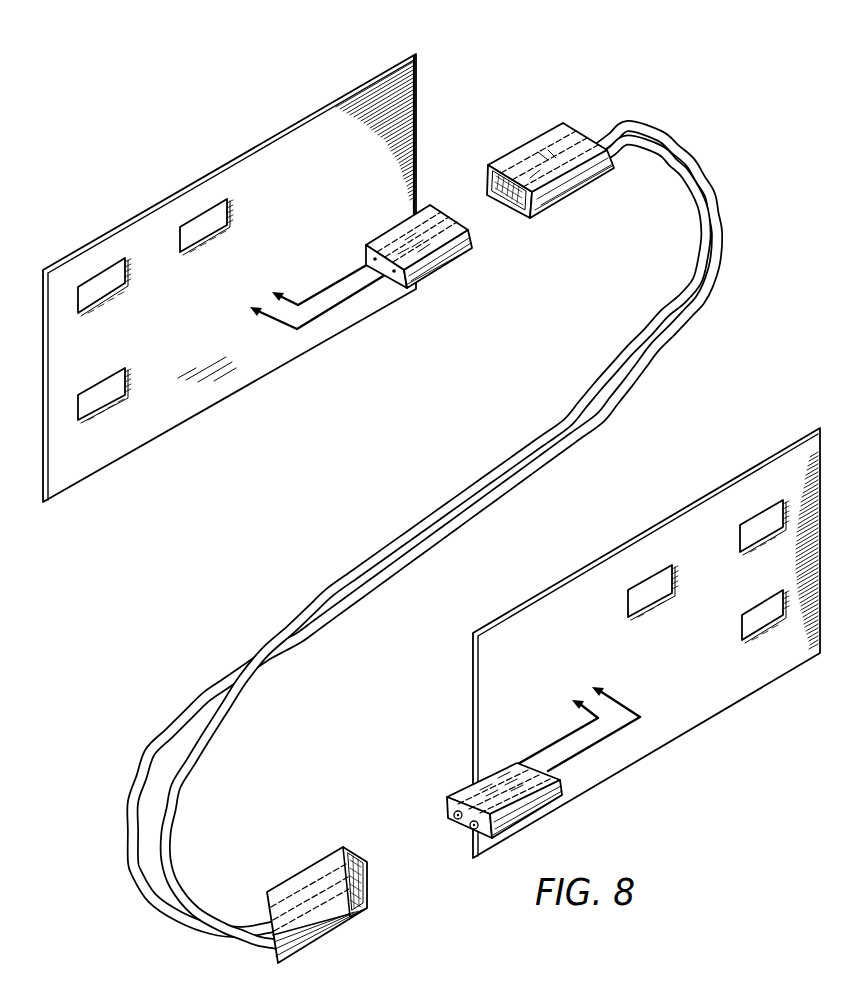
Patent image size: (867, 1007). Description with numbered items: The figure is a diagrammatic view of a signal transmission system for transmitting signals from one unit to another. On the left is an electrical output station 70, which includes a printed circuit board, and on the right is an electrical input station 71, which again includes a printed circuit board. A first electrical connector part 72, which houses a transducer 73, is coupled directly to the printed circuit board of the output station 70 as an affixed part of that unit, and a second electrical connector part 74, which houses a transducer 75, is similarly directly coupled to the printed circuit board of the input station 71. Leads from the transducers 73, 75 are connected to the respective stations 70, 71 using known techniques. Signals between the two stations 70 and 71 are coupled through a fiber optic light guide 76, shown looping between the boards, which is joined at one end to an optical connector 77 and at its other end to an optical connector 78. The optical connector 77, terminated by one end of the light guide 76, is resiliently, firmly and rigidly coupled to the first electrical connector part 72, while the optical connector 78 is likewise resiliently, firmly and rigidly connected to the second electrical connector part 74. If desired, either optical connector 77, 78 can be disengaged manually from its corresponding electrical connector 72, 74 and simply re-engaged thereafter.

The electrical output station 70 is at (292, 138).
The electrical input station 71 is at (708, 510).
The first electrical connector part 72 is at (394, 232).
The transducer 73 is at (441, 235).
The second electrical connector part 74 is at (463, 796).
The transducer 75 is at (493, 778).
The fiber optic light guide 76 is at (723, 224).
The optical connector 77 is at (538, 143).
The optical connector 78 is at (297, 882).